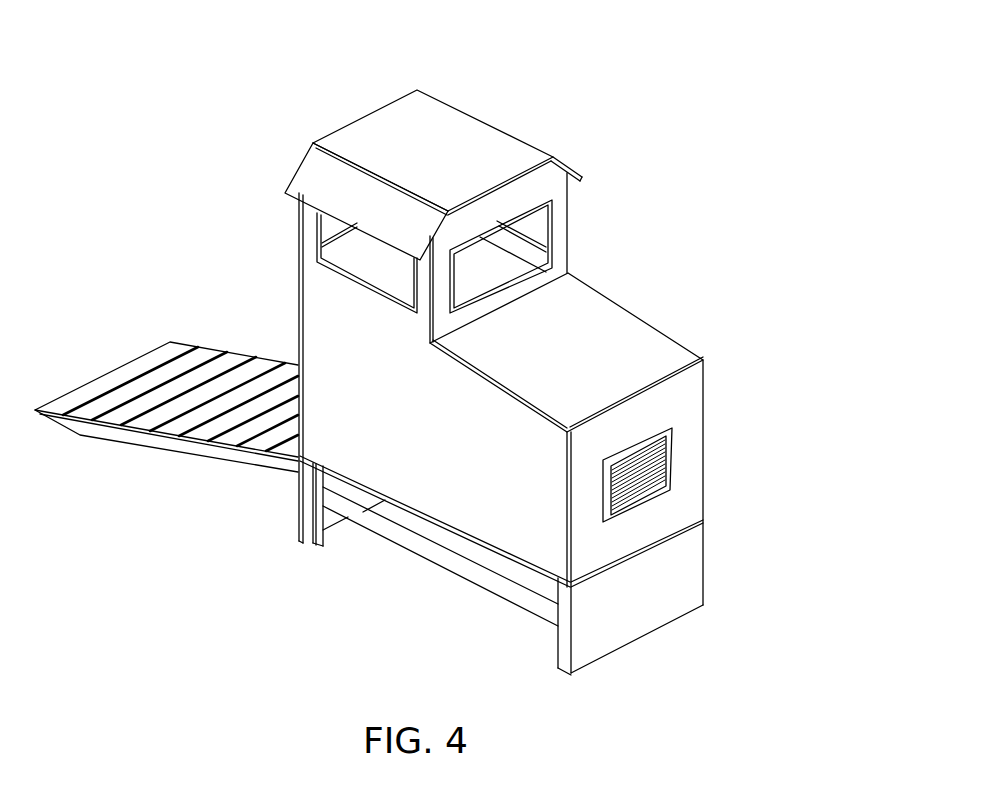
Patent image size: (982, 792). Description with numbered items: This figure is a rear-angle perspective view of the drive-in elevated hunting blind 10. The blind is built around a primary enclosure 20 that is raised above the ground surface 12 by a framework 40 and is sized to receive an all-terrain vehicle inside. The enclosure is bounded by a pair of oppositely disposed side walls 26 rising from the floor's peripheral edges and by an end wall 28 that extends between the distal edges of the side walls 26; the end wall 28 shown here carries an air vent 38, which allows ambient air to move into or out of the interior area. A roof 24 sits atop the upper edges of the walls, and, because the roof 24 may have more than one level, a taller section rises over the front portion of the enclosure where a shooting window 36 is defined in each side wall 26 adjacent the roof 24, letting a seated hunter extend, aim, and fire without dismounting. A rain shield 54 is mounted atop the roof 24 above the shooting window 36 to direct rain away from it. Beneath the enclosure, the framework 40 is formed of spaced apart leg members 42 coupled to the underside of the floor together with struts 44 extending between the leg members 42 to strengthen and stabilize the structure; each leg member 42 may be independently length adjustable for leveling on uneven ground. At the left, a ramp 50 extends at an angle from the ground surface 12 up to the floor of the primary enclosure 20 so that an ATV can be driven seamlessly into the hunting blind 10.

The hunting blind 10 is at (641, 72).
The ground surface 12 is at (367, 643).
The primary enclosure 20 is at (760, 369).
The roof 24 is at (658, 337).
The side walls 26 is at (311, 318).
The end wall 28 is at (698, 507).
The shooting window 36 is at (320, 233).
The air vent 38 is at (665, 458).
The framework 40 is at (499, 620).
The leg members 42 is at (285, 520).
The struts 44 is at (435, 541).
The ramp 50 is at (180, 444).
The rain shield 54 is at (309, 172).